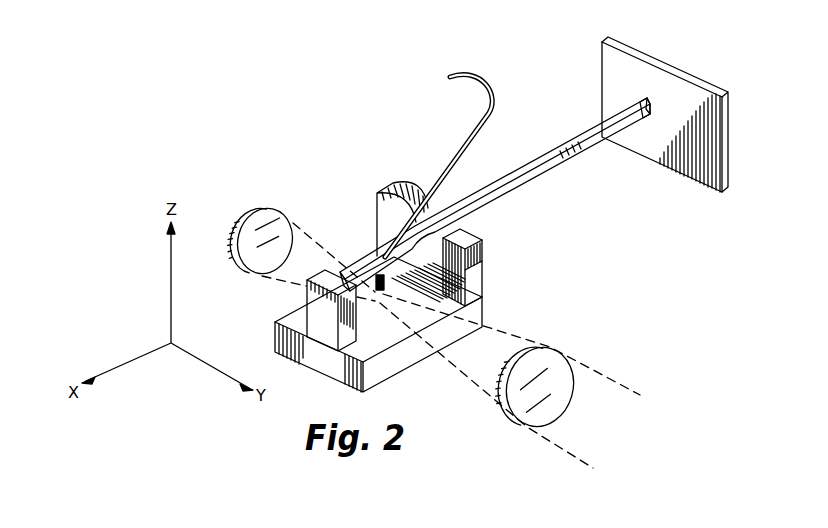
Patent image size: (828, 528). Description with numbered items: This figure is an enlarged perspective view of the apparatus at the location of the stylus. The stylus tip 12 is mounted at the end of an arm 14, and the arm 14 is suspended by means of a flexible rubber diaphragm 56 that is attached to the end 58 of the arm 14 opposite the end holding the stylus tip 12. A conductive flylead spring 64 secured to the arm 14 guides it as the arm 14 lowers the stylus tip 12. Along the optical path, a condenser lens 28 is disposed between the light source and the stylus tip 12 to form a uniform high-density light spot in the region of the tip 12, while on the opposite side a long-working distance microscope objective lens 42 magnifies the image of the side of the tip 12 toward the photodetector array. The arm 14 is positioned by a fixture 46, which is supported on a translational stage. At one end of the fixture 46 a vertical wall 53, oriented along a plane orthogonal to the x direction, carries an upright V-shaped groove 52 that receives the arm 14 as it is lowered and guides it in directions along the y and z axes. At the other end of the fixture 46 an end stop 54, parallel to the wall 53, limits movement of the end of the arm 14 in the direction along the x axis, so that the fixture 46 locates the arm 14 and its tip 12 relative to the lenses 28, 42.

The stylus tip 12 is at (377, 288).
The arm 14 is at (503, 191).
The condenser lens 28 is at (247, 219).
The long-working distance microscope objective lens 42 is at (571, 386).
The fixture 46 is at (404, 353).
The V-shaped groove 52 is at (479, 249).
The vertical wall 53 is at (481, 297).
The end stop 54 is at (317, 309).
The flexible rubber diaphragm 56 is at (716, 84).
The end of the arm 58 is at (648, 98).
The conductive flylead spring 64 is at (491, 110).